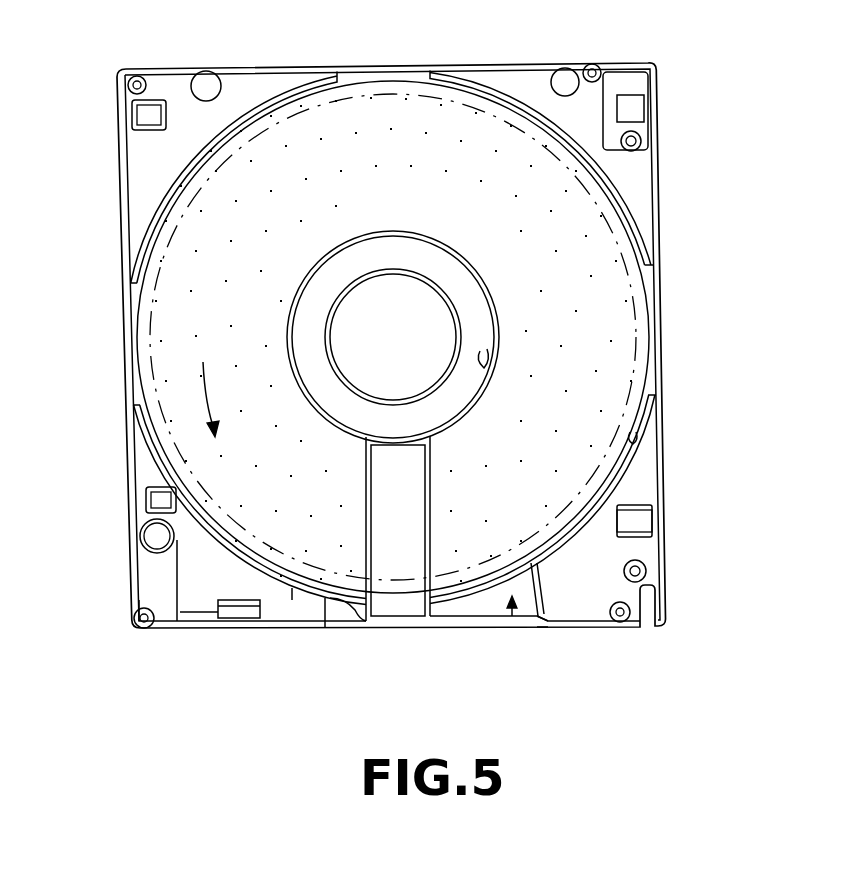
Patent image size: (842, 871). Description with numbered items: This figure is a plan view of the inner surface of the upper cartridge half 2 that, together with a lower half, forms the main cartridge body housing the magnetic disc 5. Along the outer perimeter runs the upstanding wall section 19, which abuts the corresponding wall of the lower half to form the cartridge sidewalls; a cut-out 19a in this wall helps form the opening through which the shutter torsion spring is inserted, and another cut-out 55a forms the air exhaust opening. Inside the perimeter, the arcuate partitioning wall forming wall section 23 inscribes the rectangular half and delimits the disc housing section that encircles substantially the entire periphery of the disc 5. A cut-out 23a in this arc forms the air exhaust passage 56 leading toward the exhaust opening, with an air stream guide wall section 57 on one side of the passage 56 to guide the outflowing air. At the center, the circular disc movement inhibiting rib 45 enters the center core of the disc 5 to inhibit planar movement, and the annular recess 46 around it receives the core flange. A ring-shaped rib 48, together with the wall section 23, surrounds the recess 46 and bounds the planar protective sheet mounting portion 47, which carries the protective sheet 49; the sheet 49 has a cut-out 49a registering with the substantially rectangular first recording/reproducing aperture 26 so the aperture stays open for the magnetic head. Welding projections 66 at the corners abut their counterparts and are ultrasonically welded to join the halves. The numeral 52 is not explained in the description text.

The upper cartridge half 2 is at (391, 324).
The magnetic disc 5 is at (438, 305).
The upstanding wall section 19 is at (523, 63).
The cut-out 19a is at (273, 628).
The partitioning wall forming wall section 23 is at (394, 338).
The cut-out 23a is at (505, 560).
The first recording/reproducing aperture 26 is at (424, 618).
The disc movement inhibiting rib 45 is at (445, 312).
The annular recess 46 is at (420, 304).
The protective sheet mounting portion 47 is at (636, 439).
The ring-shaped rib 48 is at (485, 365).
The protective sheet 49 is at (605, 386).
The cut-out 49a is at (370, 625).
The recording area 52 is at (610, 312).
The cut-out 55a is at (538, 620).
The air exhaust passage 56 is at (505, 632).
The air stream guide wall section 57 is at (546, 585).
The welding projection 66 is at (128, 87).